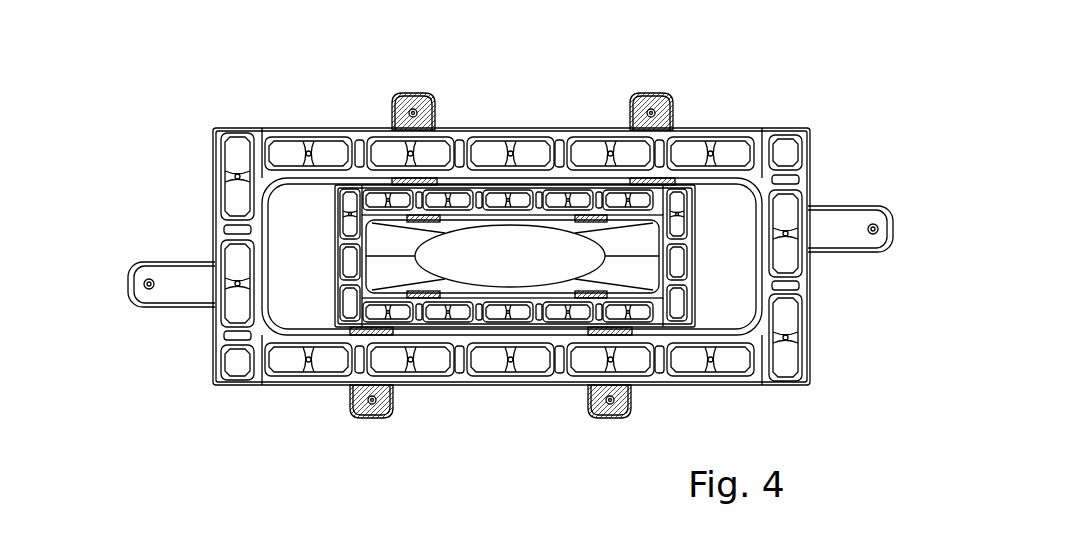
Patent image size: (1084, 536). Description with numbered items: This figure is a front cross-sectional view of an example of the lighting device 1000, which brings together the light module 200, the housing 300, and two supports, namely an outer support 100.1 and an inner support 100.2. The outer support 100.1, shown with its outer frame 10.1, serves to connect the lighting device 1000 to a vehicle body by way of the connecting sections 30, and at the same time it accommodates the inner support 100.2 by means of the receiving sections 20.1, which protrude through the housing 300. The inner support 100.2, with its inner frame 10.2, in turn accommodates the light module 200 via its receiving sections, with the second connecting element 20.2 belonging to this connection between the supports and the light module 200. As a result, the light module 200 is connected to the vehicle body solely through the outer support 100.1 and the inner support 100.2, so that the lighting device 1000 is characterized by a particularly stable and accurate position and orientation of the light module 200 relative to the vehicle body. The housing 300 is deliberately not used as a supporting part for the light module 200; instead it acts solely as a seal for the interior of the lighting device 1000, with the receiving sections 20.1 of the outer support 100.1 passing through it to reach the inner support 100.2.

The lighting device 1000 is at (188, 110).
The outer frame 10.1 is at (290, 126).
The inner frame 10.2 is at (332, 225).
The receiving sections 20.1 is at (422, 182).
The second connecting element 20.2 is at (588, 215).
The connecting sections 30 is at (350, 403).
The outer support 100.1 is at (755, 108).
The inner support 100.2 is at (697, 283).
The light module 200 is at (512, 256).
The housing 300 is at (753, 187).